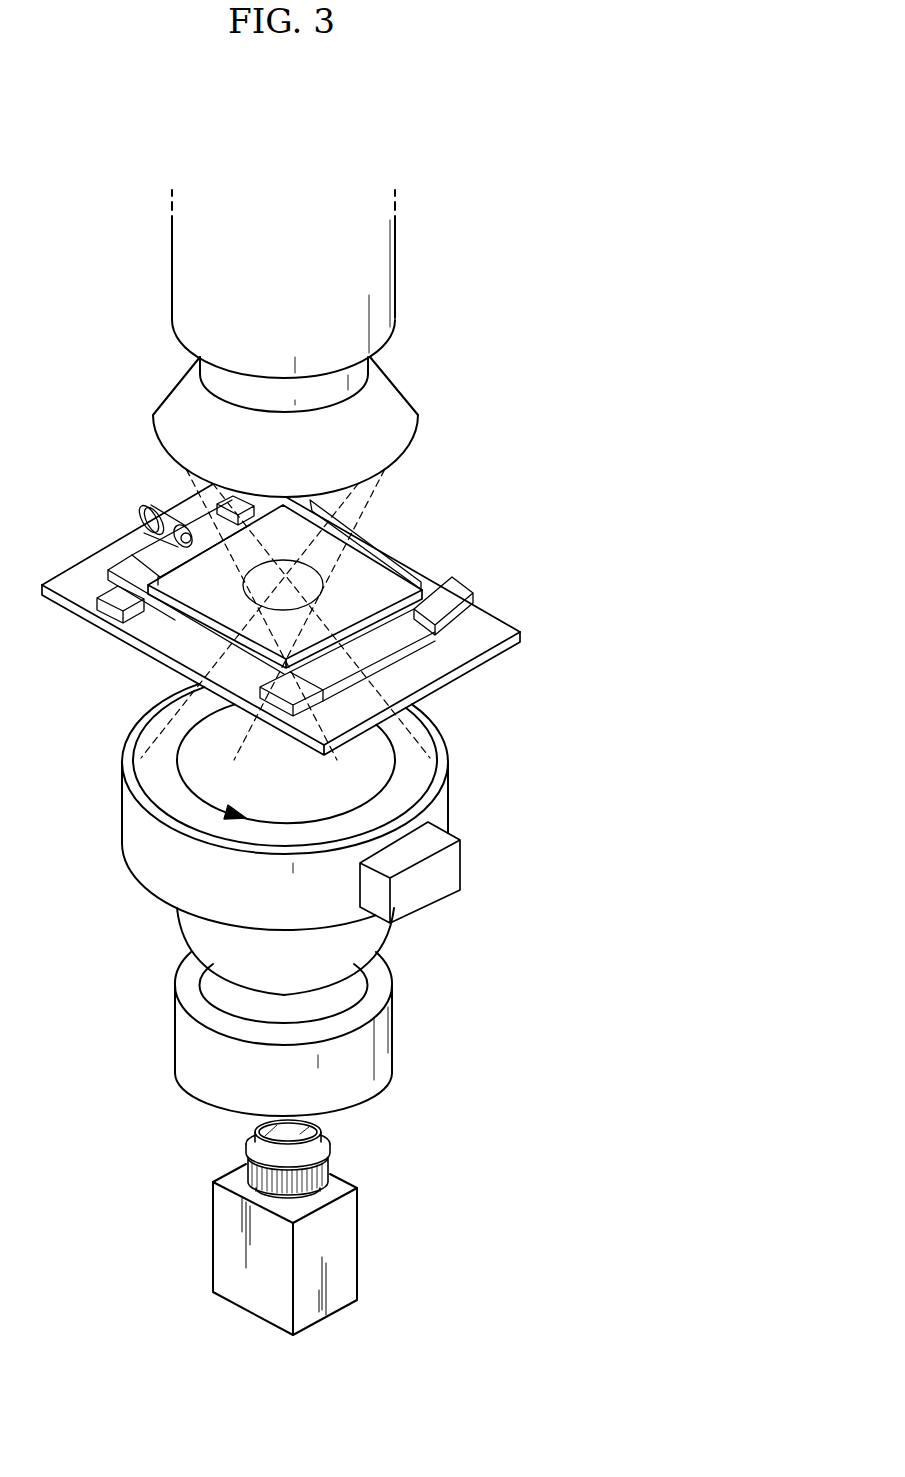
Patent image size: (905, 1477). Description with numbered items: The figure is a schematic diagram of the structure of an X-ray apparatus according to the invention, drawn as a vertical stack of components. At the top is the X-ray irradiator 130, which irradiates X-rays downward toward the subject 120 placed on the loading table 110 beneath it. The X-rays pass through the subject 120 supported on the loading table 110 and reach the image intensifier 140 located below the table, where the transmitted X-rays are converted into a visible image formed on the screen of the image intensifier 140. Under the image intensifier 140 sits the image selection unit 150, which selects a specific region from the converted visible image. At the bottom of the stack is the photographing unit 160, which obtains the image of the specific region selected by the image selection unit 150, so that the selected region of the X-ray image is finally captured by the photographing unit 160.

The loading table 110 is at (442, 662).
The subject 120 is at (380, 568).
The X-ray irradiator 130 is at (380, 283).
The image intensifier 140 is at (440, 812).
The image selection unit 150 is at (388, 1043).
The photographing unit 160 is at (347, 1251).